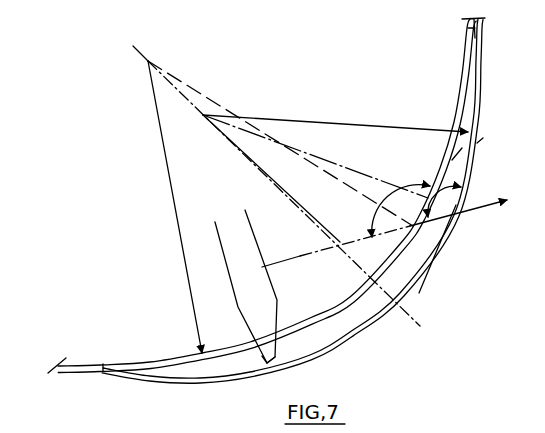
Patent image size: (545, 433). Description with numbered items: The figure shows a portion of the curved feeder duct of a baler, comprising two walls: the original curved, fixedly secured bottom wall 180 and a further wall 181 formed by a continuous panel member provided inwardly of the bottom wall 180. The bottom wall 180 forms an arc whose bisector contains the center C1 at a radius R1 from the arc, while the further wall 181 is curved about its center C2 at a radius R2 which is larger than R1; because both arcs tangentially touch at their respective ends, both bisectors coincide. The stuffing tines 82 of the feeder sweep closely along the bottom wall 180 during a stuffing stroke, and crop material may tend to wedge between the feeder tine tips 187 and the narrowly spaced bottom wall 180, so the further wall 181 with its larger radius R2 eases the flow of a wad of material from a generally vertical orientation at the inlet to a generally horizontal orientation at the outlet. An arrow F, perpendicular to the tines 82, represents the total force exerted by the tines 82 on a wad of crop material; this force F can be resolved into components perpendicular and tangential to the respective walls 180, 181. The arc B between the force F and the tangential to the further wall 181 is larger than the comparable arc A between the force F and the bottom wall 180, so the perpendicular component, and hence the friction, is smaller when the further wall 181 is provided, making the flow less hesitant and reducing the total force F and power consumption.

The stuffing tines 82 is at (254, 254).
The bottom wall 180 is at (386, 312).
The further wall 181 is at (344, 309).
The feeder tine tips 187 is at (277, 353).
The center of bottom wall arc C1 is at (300, 176).
The center of further wall arc C2 is at (276, 185).
The radius of curvature of bottom wall R1 is at (335, 115).
The radius of curvature of further wall R2 is at (280, 207).
The arc A is at (444, 192).
The arc B is at (401, 203).
The force F is at (393, 215).